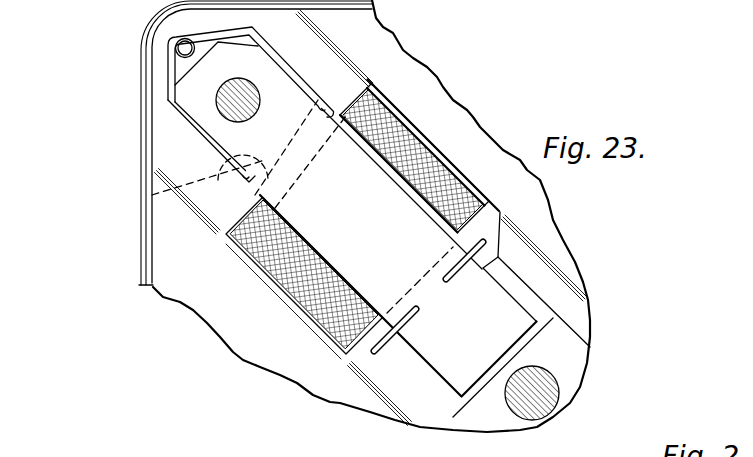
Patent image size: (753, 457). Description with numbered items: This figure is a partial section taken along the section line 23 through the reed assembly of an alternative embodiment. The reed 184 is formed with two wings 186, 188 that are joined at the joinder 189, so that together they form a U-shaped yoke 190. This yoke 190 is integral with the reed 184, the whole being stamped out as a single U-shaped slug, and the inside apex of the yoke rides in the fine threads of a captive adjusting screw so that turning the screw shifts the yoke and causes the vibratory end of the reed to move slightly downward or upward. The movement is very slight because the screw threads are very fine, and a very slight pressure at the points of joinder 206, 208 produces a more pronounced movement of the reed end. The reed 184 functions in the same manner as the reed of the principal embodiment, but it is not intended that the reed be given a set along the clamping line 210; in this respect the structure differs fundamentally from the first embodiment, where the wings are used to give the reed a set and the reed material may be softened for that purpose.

The section line 23 is at (440, 167).
The reed 184 is at (384, 245).
The wing 186 is at (175, 132).
The wing 188 is at (302, 72).
The joinder of wings 189 is at (175, 46).
The yoke 190 is at (160, 90).
The point of joinder 206 is at (328, 110).
The point of joinder 208 is at (246, 197).
The clamping line 210 is at (157, 193).